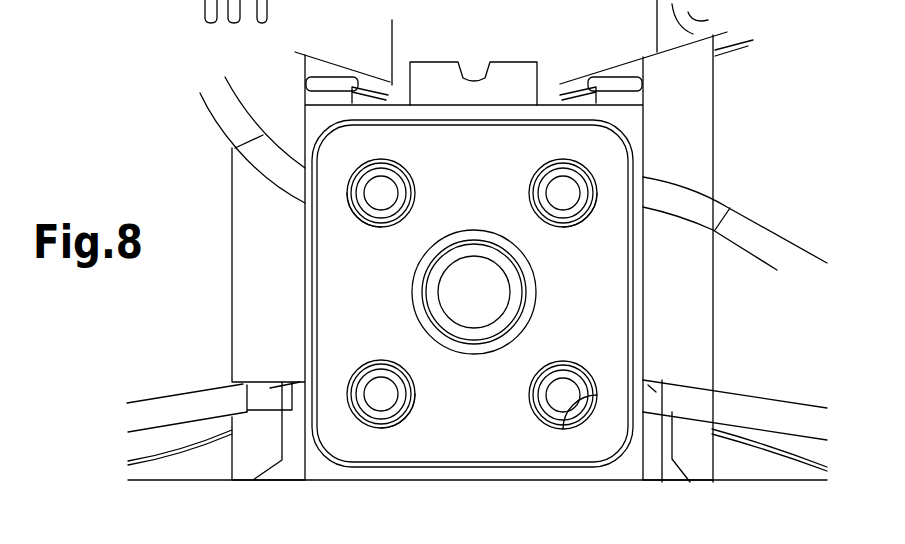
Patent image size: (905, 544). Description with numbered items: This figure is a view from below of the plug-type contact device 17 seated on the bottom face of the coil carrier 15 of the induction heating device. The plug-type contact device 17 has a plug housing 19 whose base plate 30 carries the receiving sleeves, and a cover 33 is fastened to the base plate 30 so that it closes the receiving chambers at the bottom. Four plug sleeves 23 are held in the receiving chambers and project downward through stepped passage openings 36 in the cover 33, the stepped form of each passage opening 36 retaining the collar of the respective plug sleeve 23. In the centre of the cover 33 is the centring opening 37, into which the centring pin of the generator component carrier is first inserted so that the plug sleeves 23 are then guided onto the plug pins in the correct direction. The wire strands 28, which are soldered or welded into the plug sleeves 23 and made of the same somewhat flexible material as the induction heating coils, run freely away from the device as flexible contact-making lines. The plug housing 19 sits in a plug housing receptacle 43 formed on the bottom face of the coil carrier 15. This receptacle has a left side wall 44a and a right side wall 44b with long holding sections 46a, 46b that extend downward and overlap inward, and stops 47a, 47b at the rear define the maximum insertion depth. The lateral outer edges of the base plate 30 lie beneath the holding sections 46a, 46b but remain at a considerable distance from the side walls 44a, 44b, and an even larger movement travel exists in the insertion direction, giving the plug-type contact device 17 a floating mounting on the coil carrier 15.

The coil carrier 15 is at (500, 47).
The plug-type contact device 17 is at (273, 470).
The plug housing 19 is at (633, 130).
The plug sleeve 23 is at (375, 176).
The wire strand 28 is at (230, 120).
The base plate 30 is at (301, 452).
The cover 33 is at (490, 217).
The passage opening 36 is at (358, 213).
The centring opening 37 is at (484, 308).
The plug housing receptacle 43 is at (642, 450).
The side wall 44a is at (672, 442).
The side wall 44b is at (281, 433).
The holding section 46a is at (705, 275).
The holding section 46b is at (290, 255).
The stop 47a is at (607, 73).
The stop 47b is at (323, 73).